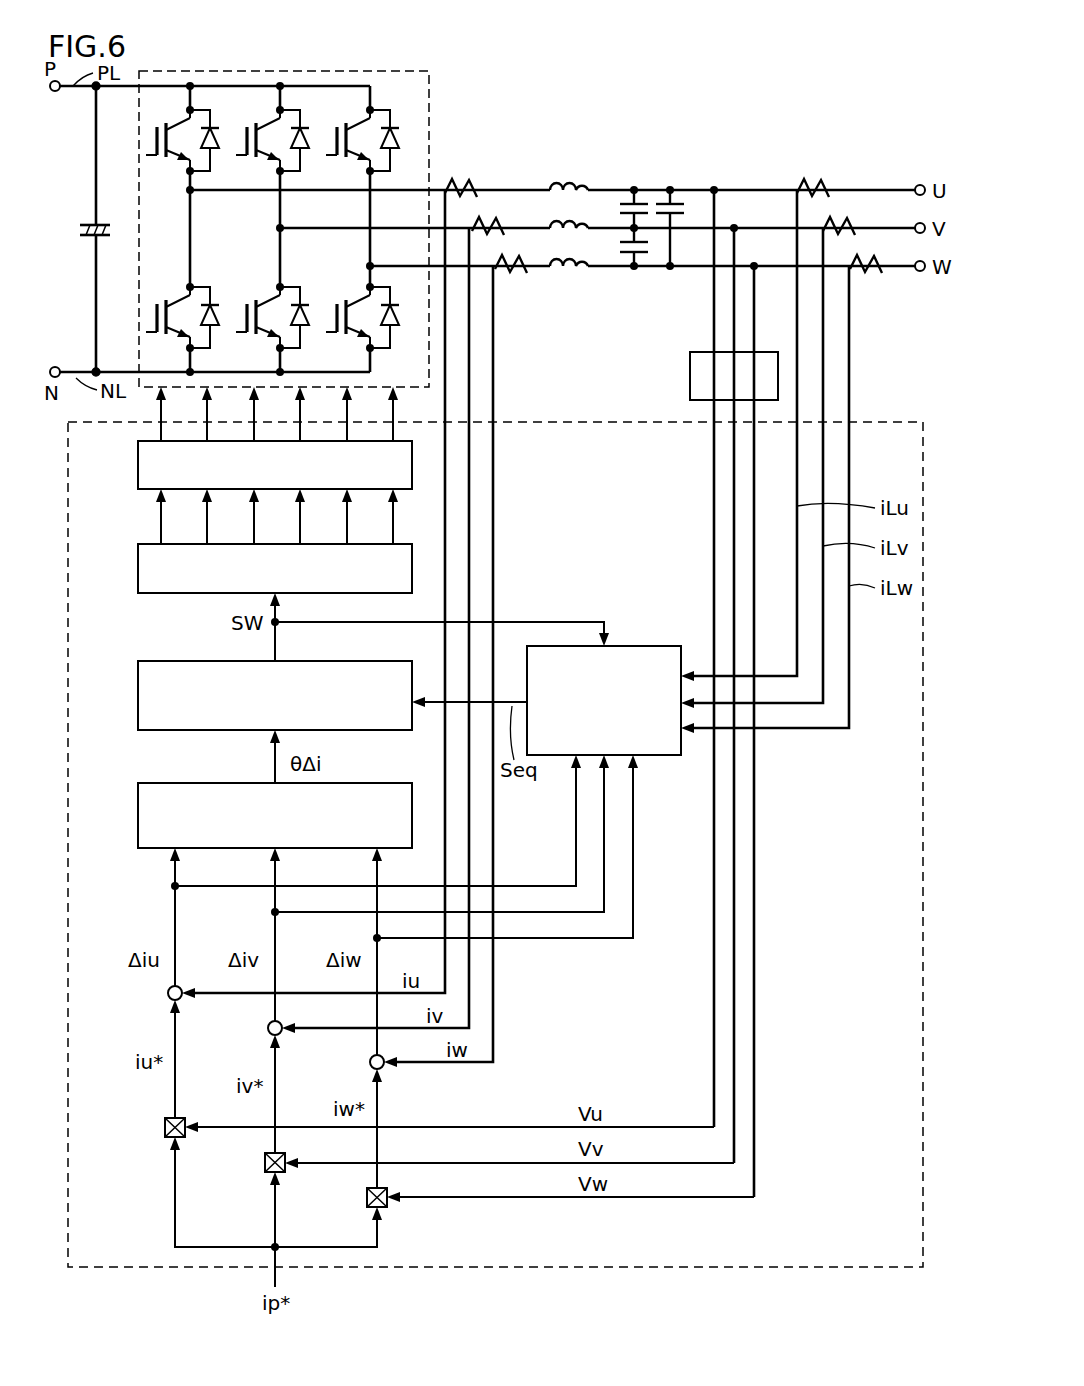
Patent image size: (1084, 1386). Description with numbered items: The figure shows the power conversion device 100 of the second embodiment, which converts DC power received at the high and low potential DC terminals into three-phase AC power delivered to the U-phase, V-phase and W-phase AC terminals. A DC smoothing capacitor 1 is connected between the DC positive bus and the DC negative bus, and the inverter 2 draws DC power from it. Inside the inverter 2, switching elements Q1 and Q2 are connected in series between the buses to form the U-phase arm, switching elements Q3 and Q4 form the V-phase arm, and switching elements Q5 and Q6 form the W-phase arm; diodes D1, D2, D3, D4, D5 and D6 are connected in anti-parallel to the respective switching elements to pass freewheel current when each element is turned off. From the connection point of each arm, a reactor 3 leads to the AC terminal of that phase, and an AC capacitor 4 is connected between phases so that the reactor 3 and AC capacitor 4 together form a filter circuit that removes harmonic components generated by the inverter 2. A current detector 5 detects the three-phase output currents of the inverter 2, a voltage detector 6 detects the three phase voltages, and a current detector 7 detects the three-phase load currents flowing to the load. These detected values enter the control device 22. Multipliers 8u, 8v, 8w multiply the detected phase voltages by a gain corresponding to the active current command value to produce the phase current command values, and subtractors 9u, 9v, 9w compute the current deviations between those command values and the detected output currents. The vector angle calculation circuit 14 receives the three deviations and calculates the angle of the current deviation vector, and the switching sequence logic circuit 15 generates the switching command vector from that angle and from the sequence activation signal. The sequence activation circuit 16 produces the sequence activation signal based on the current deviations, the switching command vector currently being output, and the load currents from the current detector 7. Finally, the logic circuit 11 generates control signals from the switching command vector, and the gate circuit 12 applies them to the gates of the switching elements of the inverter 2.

The DC smoothing capacitor 1 is at (89, 236).
The inverter 2 is at (378, 70).
The reactor 3 is at (566, 184).
The AC capacitor 4 is at (665, 200).
The current detector 5 is at (470, 186).
The voltage detector 6 is at (690, 383).
The current detector 7 is at (822, 186).
The power conversion device 100 is at (846, 107).
The logic circuit 11 is at (138, 570).
The gate circuit 12 is at (138, 467).
The vector angle calculation circuit 14 is at (138, 822).
The switching sequence logic circuit 15 is at (138, 700).
The sequence activation circuit 16 is at (632, 646).
The control device 22 is at (874, 422).
The multiplier 8u is at (185, 1134).
The multiplier 8v is at (285, 1169).
The multiplier 8w is at (387, 1203).
The subtractor 9u is at (182, 1000).
The subtractor 9v is at (282, 1035).
The subtractor 9w is at (384, 1069).
The switching element Q1 is at (182, 136).
The switching element Q2 is at (182, 313).
The switching element Q3 is at (272, 136).
The switching element Q4 is at (272, 313).
The switching element Q5 is at (362, 136).
The switching element Q6 is at (362, 313).
The diode D1 is at (228, 155).
The diode D2 is at (228, 332).
The diode D3 is at (318, 155).
The diode D4 is at (318, 332).
The diode D5 is at (408, 155).
The diode D6 is at (408, 332).